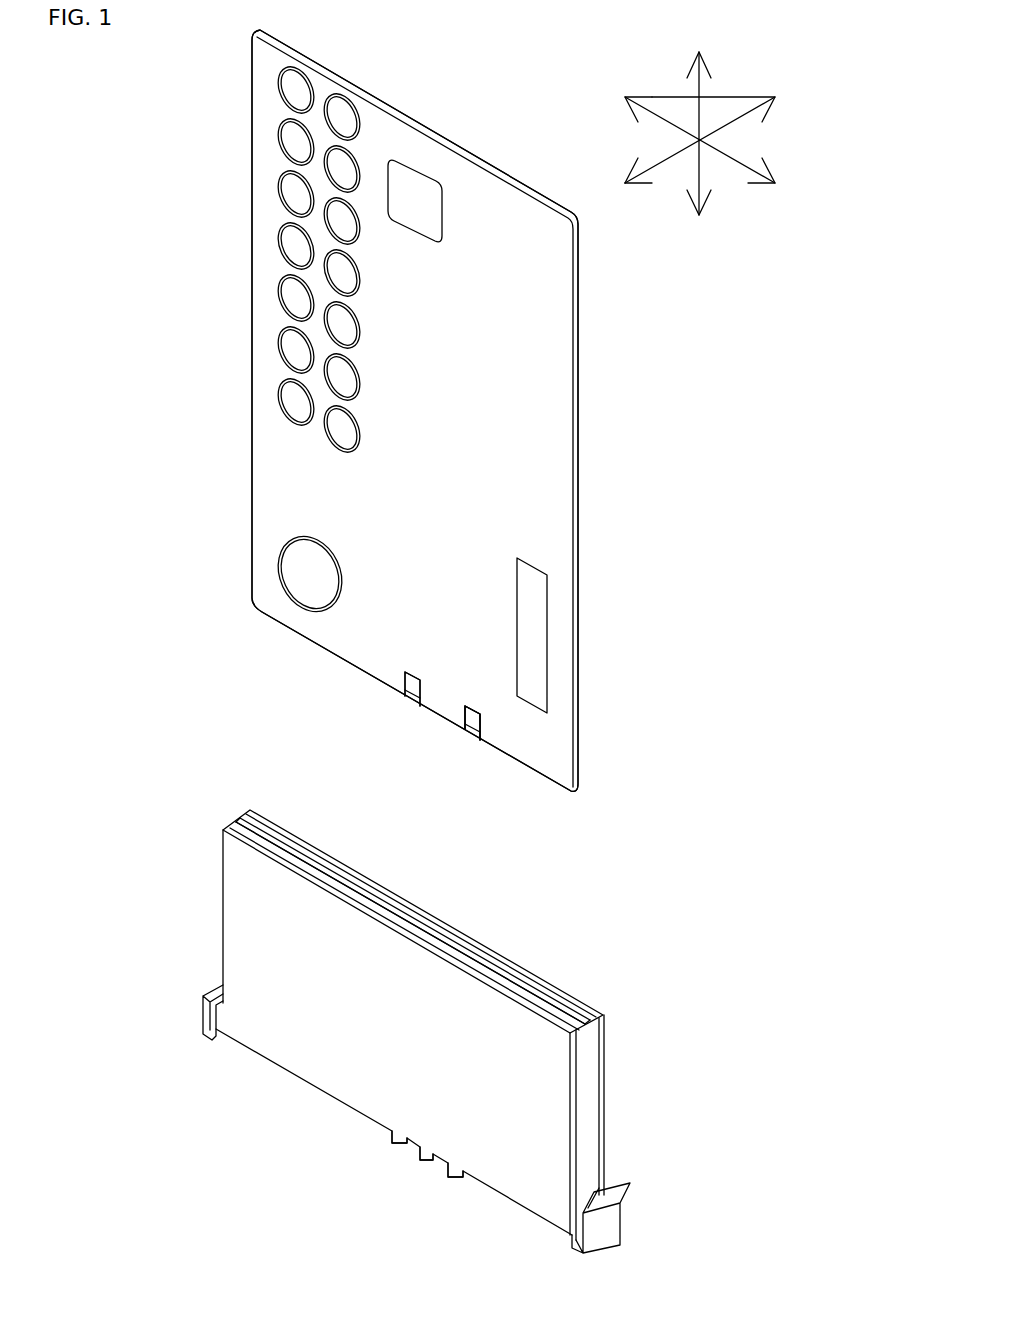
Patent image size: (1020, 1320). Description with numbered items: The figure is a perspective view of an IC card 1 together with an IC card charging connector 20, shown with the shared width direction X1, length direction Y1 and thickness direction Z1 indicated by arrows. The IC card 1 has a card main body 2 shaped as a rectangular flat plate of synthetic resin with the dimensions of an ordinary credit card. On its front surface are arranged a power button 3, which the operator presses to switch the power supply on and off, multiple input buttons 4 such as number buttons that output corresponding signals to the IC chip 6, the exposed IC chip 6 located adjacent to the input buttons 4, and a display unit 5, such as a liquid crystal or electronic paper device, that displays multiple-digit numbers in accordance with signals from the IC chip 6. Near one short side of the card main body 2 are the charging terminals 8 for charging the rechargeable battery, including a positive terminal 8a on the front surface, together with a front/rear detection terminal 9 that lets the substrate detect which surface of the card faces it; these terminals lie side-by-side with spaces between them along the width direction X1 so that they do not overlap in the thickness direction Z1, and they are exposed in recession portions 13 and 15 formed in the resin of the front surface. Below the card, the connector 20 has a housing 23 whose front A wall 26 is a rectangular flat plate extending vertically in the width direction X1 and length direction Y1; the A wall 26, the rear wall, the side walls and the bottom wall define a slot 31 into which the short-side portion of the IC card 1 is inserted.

The IC card 1 is at (518, 368).
The card main body 2 is at (543, 458).
The power button 3 is at (302, 567).
The input buttons 4 is at (293, 287).
The display unit 5 is at (543, 627).
The IC chip 6 is at (423, 208).
The charging terminals 8 is at (473, 716).
The positive terminal 8a is at (473, 716).
The front/rear detection terminal 9 is at (413, 683).
The recession portion 13 is at (472, 735).
The recession portion 15 is at (410, 705).
The connector 20 is at (550, 1085).
The housing 23 is at (527, 1168).
The A wall 26 is at (487, 1023).
The slot 31 is at (563, 1015).
The width direction X1 is at (733, 157).
The length direction Y1 is at (700, 102).
The thickness direction Z1 is at (740, 115).